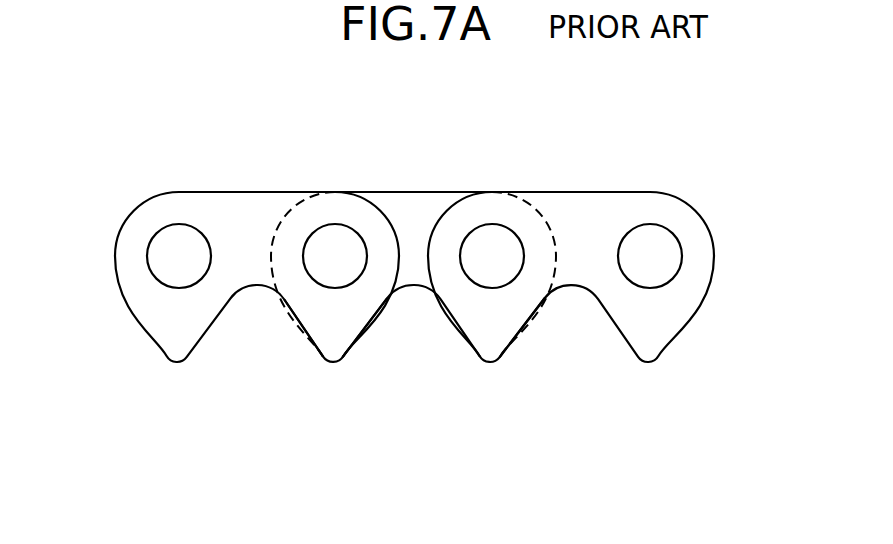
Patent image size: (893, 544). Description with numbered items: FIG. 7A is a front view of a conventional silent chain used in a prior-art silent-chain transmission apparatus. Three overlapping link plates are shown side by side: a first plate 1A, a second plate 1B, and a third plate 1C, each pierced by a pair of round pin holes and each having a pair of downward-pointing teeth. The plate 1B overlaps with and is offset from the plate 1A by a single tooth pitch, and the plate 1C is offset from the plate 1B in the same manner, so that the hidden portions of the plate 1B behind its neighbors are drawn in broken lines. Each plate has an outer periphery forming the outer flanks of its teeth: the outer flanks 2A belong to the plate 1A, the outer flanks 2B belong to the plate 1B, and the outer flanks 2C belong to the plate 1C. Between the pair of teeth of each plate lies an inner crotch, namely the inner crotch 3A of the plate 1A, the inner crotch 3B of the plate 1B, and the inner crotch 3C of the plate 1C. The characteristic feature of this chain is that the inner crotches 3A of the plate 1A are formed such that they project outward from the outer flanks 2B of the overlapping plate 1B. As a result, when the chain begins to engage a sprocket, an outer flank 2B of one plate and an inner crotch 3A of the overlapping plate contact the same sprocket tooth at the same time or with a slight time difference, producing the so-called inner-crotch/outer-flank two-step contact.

The plate 1A is at (240, 193).
The plate 1B is at (418, 193).
The third link plate 1C is at (583, 193).
The outer periphery of first link plate 2A is at (150, 340).
The outer flank 2B is at (299, 312).
The outer periphery of third link plate 2C is at (461, 331).
The inner crotch 3A is at (303, 340).
The tooth flank of second link plate 3B is at (367, 340).
The tooth flank of third link plate 3C is at (526, 327).